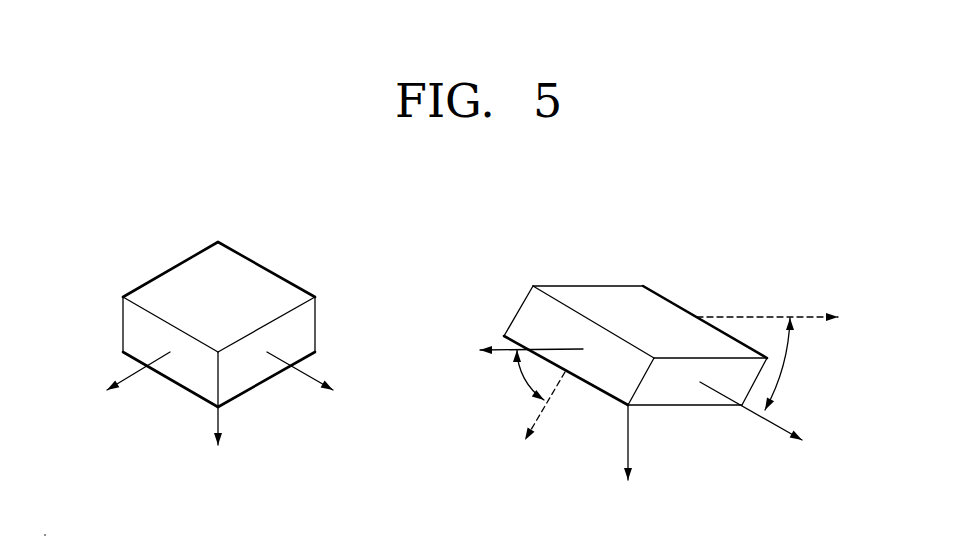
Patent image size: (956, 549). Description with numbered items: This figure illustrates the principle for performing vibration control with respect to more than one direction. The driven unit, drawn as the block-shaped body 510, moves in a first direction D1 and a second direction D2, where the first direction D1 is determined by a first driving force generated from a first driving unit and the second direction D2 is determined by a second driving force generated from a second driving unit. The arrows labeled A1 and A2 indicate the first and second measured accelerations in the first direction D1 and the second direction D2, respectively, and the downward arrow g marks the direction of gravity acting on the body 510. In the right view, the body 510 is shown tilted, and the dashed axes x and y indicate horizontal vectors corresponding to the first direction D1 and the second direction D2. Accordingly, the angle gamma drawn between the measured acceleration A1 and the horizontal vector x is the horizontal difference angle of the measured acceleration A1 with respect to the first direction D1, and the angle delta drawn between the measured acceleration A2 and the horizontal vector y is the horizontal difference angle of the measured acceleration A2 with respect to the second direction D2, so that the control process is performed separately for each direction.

The target body (tilted) 510 is at (233, 265).
The first measured acceleration A1 is at (133, 372).
The second measured acceleration A2 is at (308, 370).
The first direction D1 is at (92, 400).
The second direction D2 is at (356, 400).
The gravity direction g is at (423, 456).
The horizontal vector x is at (534, 410).
The horizontal vector y is at (778, 354).